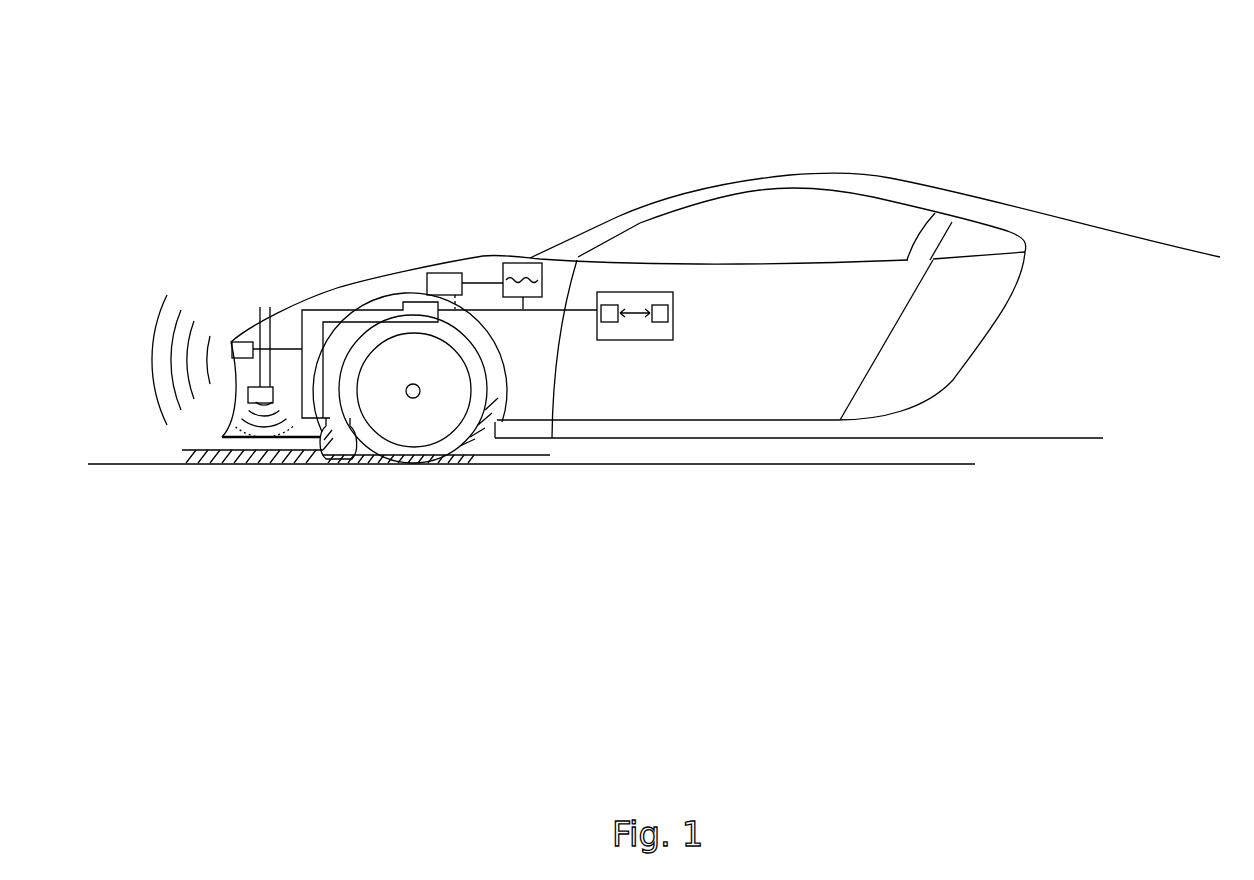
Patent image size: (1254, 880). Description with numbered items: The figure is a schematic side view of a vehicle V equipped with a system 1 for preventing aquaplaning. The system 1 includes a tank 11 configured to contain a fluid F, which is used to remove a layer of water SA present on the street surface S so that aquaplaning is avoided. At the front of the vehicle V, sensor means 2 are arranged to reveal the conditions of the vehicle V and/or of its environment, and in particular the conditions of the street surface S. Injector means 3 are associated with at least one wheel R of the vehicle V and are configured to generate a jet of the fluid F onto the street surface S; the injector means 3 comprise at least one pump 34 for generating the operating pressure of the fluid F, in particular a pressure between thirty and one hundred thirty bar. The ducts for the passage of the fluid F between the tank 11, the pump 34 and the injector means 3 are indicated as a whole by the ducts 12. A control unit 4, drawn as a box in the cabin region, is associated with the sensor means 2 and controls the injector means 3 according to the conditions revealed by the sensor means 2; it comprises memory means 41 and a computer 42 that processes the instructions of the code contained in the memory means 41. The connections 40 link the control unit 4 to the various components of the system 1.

The system for preventing aquaplaning 1 is at (340, 268).
The sensor means 2 is at (258, 307).
The injector means 3 is at (357, 440).
The control unit 4 is at (630, 246).
The tank 11 is at (521, 263).
The ducts for the passage of the fluid 12 is at (403, 318).
The pump 34 is at (440, 283).
The connections between the control unit and the components 40 is at (573, 310).
The memory means 41 is at (608, 305).
The computer 42 is at (658, 305).
The fluid F is at (505, 280).
The wheel R is at (417, 412).
The street surface S is at (772, 466).
The layer of water SA is at (215, 466).
The vehicle V is at (887, 178).